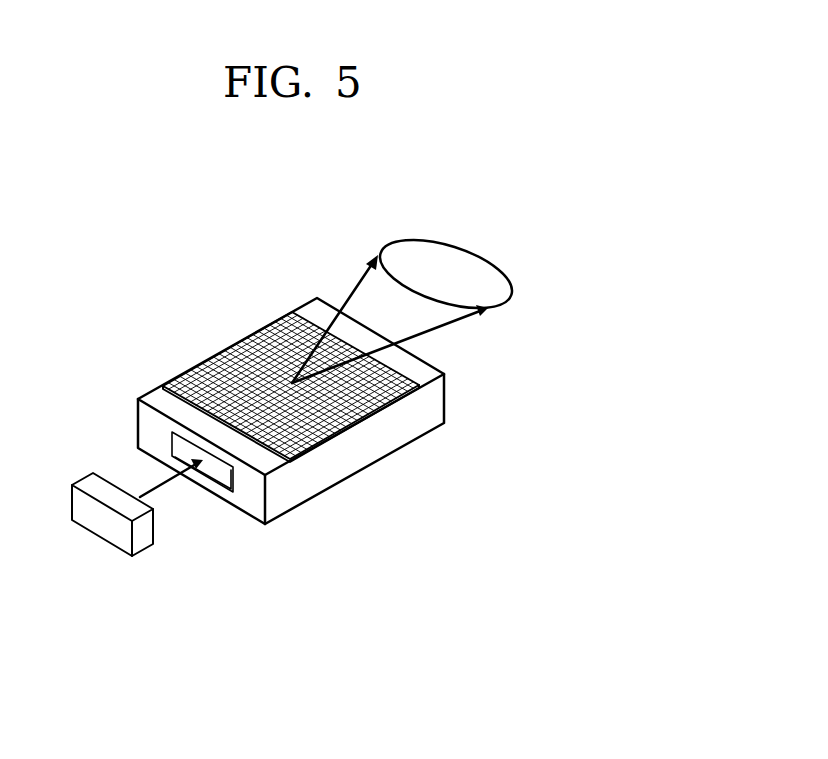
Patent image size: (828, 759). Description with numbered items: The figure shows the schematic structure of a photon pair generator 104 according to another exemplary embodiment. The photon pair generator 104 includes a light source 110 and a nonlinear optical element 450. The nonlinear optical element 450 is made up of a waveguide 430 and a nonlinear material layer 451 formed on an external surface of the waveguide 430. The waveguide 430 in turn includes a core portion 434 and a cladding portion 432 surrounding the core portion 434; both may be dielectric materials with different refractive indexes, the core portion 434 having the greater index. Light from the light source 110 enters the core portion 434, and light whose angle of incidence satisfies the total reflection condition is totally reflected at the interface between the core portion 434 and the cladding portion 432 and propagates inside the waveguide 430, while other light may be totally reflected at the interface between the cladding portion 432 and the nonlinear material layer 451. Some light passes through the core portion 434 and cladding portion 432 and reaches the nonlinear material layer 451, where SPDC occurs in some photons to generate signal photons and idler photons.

The photon pair generator 104 is at (583, 288).
The light source 110 is at (86, 482).
The waveguide 430 is at (291, 468).
The cladding portion 432 is at (278, 500).
The core portion 434 is at (203, 507).
The nonlinear optical element 450 is at (312, 468).
The nonlinear material layer 451 is at (203, 369).